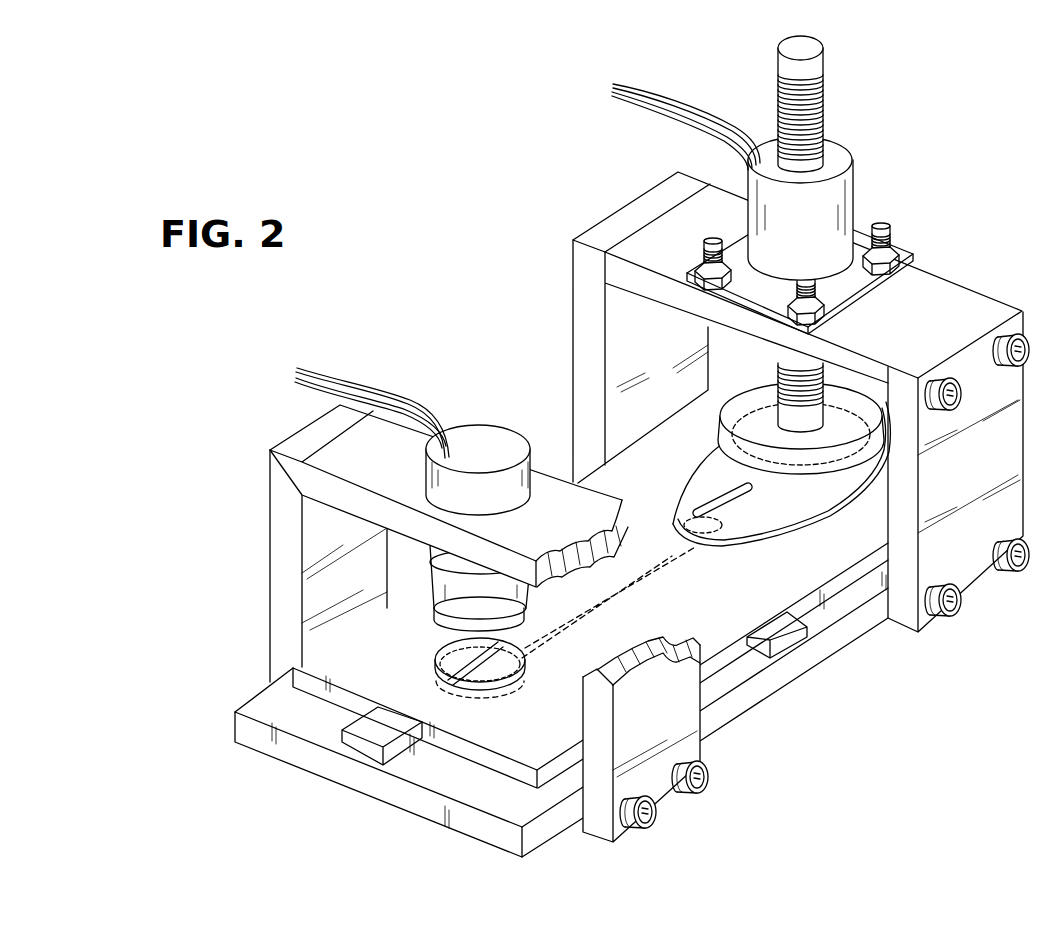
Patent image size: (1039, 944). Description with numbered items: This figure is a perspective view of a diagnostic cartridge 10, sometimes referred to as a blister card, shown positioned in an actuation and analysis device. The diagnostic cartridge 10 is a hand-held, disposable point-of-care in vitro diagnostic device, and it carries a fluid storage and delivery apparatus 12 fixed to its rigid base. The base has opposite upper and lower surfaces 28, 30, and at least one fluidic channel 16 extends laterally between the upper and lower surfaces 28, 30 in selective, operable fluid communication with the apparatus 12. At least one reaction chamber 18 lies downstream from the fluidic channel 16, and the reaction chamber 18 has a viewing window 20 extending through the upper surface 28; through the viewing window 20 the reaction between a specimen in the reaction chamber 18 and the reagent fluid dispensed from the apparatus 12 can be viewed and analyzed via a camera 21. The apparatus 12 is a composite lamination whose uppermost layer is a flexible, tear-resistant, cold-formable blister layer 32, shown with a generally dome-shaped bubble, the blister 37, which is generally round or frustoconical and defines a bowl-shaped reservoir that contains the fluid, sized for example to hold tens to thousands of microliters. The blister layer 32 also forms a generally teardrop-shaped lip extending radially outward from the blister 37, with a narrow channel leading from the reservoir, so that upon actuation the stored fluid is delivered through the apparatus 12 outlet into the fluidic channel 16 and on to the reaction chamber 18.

The diagnostic cartridge 10 is at (565, 449).
The fluid storage and delivery apparatus 12 is at (829, 514).
The fluidic channel 16 is at (668, 555).
The reaction chamber 18 is at (472, 694).
The viewing window 20 is at (456, 663).
The camera 21 is at (433, 600).
The upper surface 28 is at (716, 642).
The lower surface 30 is at (720, 698).
The blister layer 32 is at (706, 478).
The blister 37 is at (777, 490).